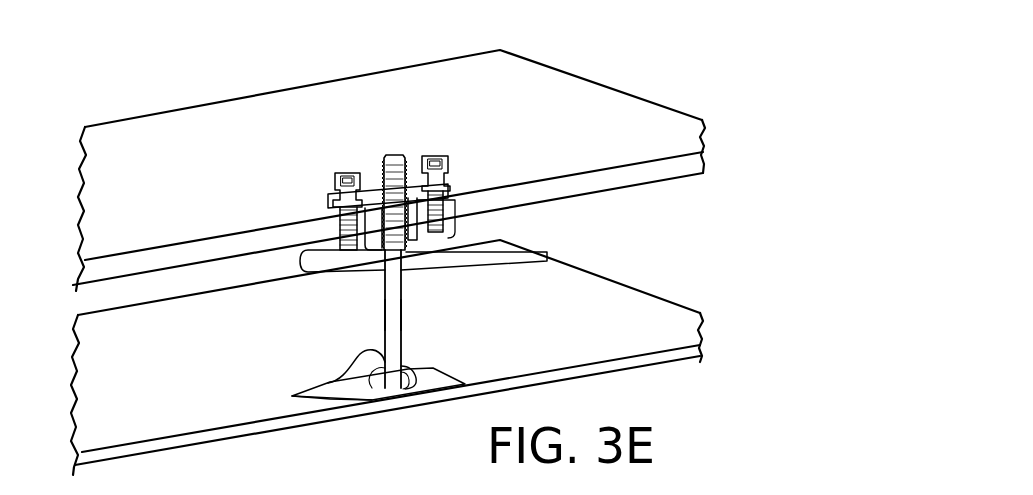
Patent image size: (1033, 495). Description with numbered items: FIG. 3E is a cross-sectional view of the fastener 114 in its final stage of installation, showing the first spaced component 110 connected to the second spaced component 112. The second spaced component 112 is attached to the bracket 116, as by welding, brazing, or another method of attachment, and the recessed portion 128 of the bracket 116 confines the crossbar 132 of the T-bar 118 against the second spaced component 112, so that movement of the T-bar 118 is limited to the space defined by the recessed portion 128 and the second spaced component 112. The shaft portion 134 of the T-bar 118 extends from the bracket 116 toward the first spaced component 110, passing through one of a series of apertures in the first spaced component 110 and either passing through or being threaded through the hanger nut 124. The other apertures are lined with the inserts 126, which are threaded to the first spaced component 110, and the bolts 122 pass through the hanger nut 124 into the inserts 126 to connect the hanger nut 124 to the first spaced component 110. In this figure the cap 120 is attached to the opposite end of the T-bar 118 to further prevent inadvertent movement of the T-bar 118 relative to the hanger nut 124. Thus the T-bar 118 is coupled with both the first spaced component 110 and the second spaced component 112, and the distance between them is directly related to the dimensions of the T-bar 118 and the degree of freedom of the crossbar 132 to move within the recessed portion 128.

The first spaced component 110 is at (238, 177).
The second spaced component 112 is at (211, 377).
The fastener 114 is at (455, 227).
The bracket 116 is at (292, 396).
The T-bar 118 is at (404, 313).
The cap 120 is at (408, 168).
The bolts 122 is at (450, 170).
The hanger nut 124 is at (378, 178).
The inserts 126 is at (338, 245).
The recessed portion 128 is at (358, 387).
The crossbar 132 is at (392, 392).
The shaft portion 134 is at (537, 257).